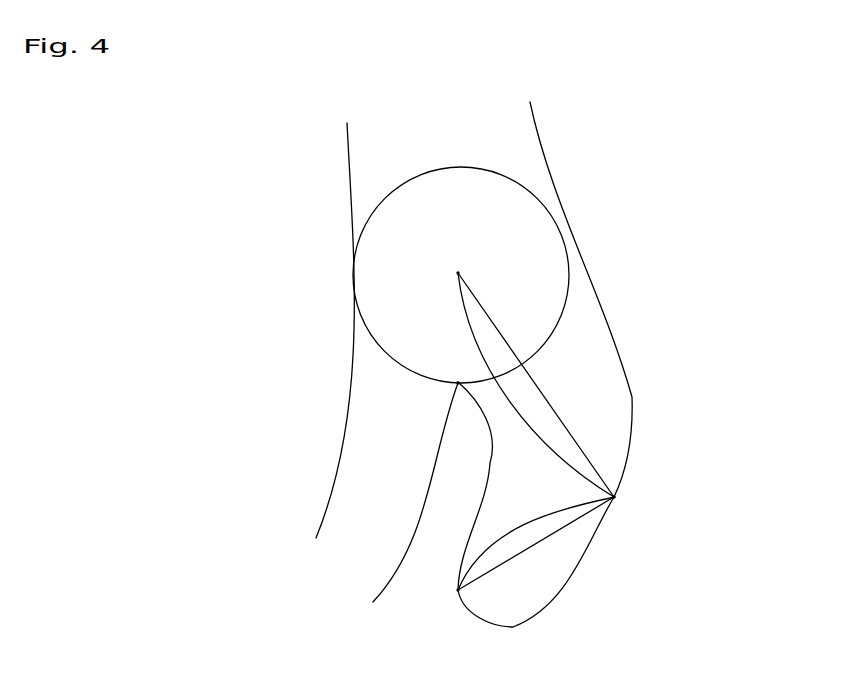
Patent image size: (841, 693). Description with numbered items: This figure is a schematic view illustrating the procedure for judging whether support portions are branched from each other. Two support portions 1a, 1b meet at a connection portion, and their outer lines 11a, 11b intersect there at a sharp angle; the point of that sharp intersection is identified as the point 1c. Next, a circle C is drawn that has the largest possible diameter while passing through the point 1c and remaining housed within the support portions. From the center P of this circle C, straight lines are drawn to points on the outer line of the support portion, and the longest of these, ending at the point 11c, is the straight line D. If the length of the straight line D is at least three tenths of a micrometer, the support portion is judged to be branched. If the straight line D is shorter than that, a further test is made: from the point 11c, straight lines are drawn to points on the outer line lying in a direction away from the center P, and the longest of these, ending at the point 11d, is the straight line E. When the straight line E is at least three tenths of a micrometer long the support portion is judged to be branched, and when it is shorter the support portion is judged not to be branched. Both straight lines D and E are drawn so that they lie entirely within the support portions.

The support portion 1a is at (367, 475).
The support portion 1b is at (600, 370).
The point 1c is at (455, 385).
The outer line 11a is at (442, 449).
The outer line 11b is at (482, 418).
The point on the outer line 11c is at (631, 509).
The point on the outer line 11d is at (435, 601).
The circle C is at (542, 202).
The center P is at (459, 262).
The straight line D is at (536, 385).
The straight line E is at (536, 543).